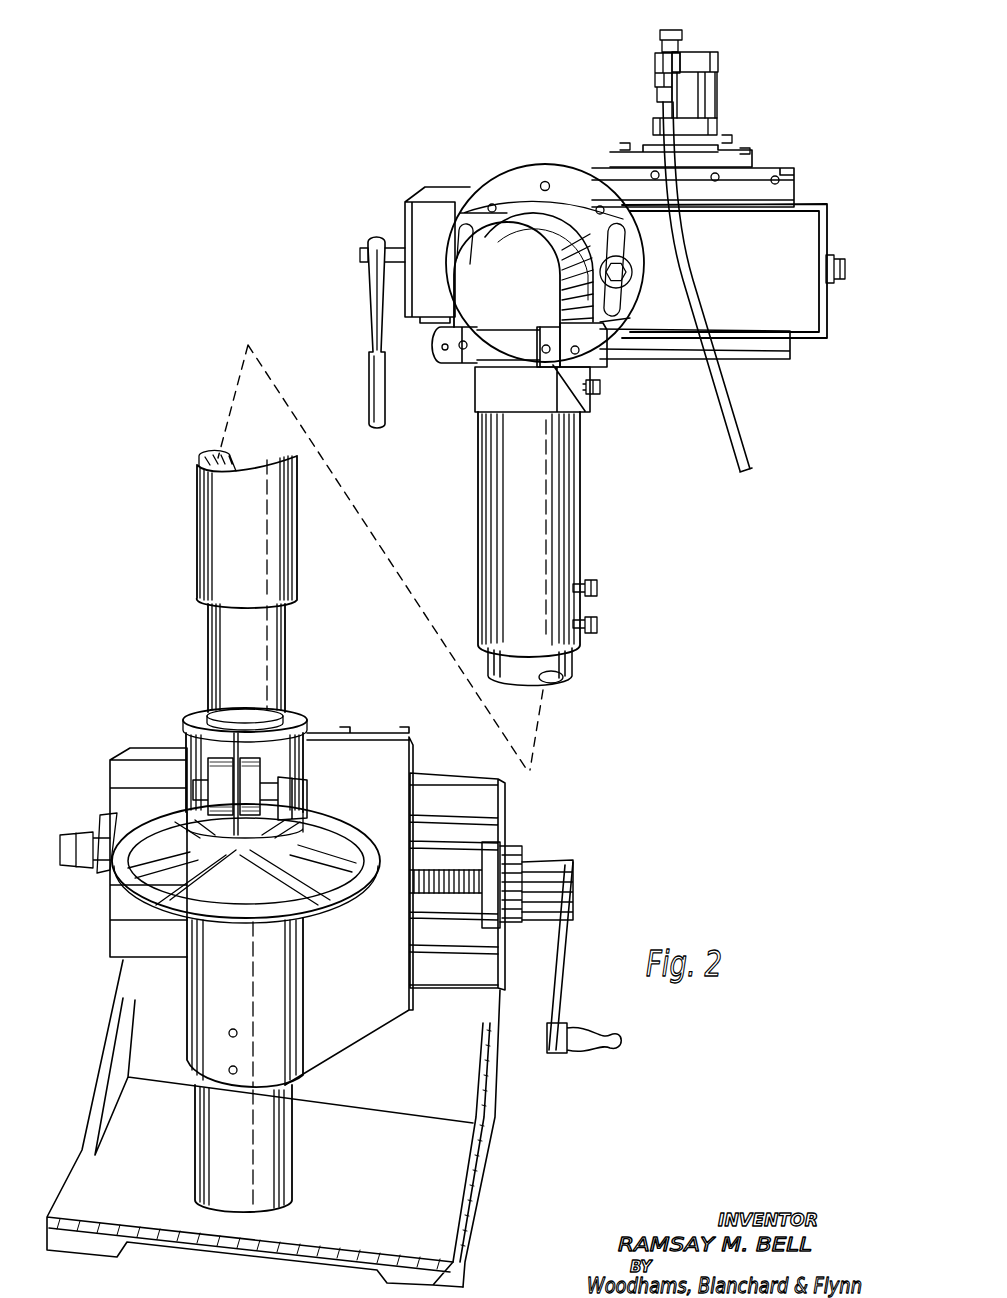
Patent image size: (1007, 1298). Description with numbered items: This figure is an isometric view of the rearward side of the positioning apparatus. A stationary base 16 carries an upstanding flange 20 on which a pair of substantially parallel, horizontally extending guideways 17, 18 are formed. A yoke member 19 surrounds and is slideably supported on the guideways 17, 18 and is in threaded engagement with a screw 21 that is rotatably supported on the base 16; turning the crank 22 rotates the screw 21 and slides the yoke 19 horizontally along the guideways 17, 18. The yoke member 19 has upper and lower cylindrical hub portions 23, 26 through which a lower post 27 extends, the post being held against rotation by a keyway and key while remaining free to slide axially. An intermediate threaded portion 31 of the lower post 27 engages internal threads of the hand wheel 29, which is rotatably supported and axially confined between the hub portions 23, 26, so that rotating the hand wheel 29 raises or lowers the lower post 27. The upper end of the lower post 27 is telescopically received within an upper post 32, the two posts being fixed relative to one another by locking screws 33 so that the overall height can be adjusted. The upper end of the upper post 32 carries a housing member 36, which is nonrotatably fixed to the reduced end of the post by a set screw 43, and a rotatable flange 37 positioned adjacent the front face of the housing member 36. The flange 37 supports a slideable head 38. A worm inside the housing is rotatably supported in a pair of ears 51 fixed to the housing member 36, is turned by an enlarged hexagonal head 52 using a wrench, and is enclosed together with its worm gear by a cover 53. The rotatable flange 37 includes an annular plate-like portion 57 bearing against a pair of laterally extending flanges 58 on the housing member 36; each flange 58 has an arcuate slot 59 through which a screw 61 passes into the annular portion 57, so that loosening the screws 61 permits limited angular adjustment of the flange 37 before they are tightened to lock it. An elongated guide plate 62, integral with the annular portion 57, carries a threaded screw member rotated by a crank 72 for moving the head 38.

The stationary base 16 is at (440, 1190).
The guideway 17 is at (472, 752).
The guideway 18 is at (472, 990).
The yoke member 19 is at (343, 1020).
The upstanding flange 20 is at (460, 1068).
The screw 21 is at (468, 872).
The crank 22 is at (563, 950).
The upper cylindrical hub portion 23 is at (200, 775).
The lower cylindrical hub portion 26 is at (205, 1012).
The lower post 27 is at (218, 655).
The hand wheel 29 is at (328, 888).
The intermediate threaded portion 31 is at (270, 718).
The upper post 32 is at (562, 508).
The locking screws 33 is at (598, 588).
The housing member 36 is at (504, 390).
The rotatable flange 37 is at (497, 159).
The slideable head 38 is at (786, 152).
The set screw 43 is at (601, 391).
The ears 51 is at (560, 370).
The enlarged hexagonal head 52 is at (589, 352).
The cover 53 is at (500, 252).
The annular plate-like portion 57 is at (538, 174).
The laterally extending flanges 58 is at (613, 322).
The arcuate slot 59 is at (621, 252).
The screw 61 is at (626, 270).
The elongated guide plate 62 is at (805, 296).
The crank 72 is at (378, 305).